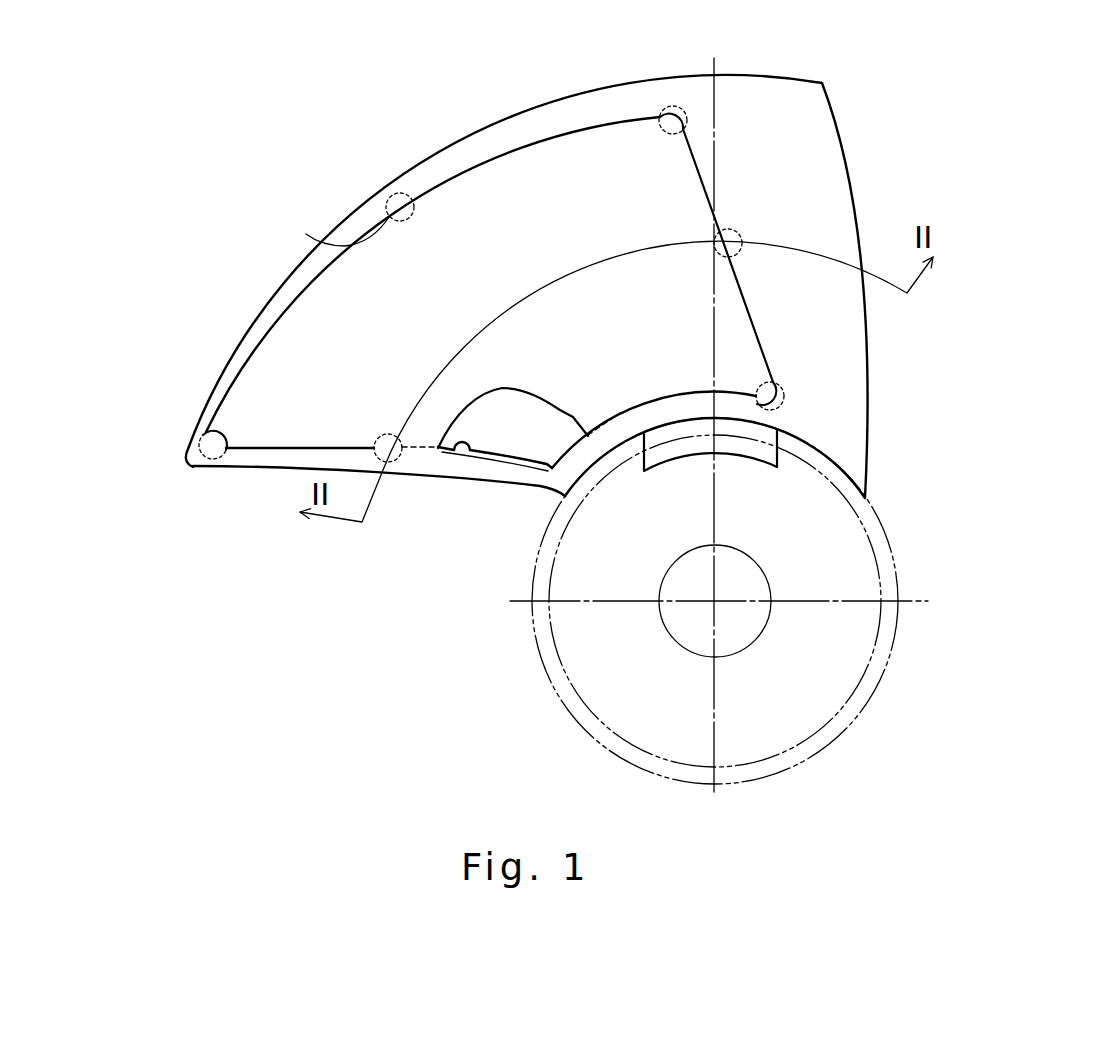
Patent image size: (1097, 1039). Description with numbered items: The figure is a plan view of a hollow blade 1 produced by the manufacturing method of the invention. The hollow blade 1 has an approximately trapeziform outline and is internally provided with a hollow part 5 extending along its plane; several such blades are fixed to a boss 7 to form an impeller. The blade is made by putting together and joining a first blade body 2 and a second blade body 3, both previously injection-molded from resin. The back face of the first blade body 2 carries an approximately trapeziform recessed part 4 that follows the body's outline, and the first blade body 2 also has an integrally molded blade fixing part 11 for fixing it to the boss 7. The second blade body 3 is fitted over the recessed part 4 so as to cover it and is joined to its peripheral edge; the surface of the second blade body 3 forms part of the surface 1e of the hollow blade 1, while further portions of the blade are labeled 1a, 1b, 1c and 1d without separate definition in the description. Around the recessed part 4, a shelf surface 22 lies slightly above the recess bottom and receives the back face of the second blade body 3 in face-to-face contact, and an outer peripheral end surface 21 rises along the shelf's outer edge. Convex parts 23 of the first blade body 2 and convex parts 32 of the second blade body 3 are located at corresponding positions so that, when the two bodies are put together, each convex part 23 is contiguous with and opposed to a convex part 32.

The hollow blade 1 is at (830, 183).
The bottom edge of bracket 1a is at (280, 468).
The right edge of bracket 1b is at (862, 226).
The outer arcuate edge of bracket 1c is at (423, 157).
The ring portion of bracket 1d is at (610, 460).
The surface of the hollow blade 1e is at (742, 97).
The first blade body 2 is at (782, 108).
The second blade body 3 is at (553, 163).
The recessed part 4 is at (527, 437).
The hollow part 5 is at (493, 442).
The boss 7 is at (877, 517).
The blade fixing part 11 is at (777, 431).
The outer peripheral end surface 21 is at (463, 452).
The shelf surface 22 is at (443, 455).
The convex parts of the first blade body 23 is at (387, 208).
The convex parts of the second blade body 32 is at (306, 234).